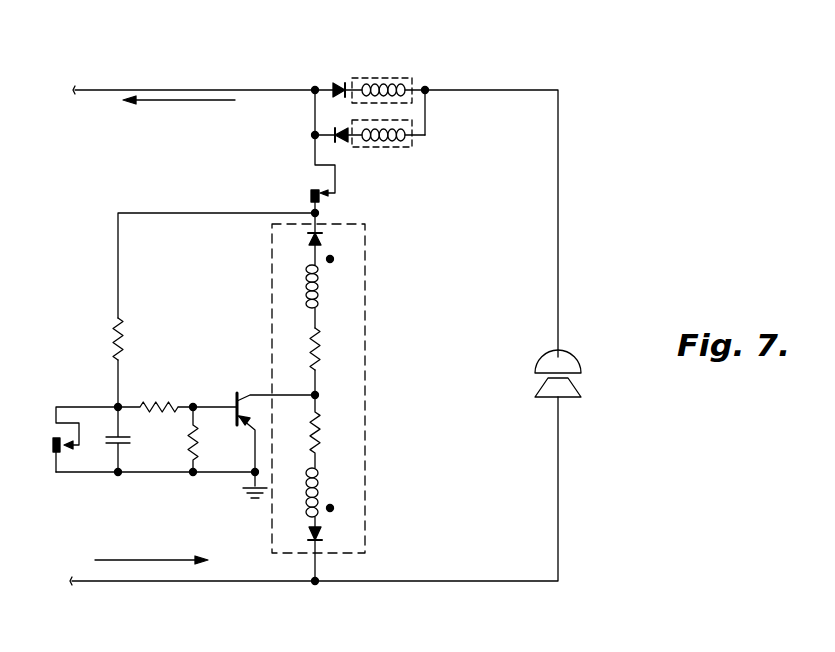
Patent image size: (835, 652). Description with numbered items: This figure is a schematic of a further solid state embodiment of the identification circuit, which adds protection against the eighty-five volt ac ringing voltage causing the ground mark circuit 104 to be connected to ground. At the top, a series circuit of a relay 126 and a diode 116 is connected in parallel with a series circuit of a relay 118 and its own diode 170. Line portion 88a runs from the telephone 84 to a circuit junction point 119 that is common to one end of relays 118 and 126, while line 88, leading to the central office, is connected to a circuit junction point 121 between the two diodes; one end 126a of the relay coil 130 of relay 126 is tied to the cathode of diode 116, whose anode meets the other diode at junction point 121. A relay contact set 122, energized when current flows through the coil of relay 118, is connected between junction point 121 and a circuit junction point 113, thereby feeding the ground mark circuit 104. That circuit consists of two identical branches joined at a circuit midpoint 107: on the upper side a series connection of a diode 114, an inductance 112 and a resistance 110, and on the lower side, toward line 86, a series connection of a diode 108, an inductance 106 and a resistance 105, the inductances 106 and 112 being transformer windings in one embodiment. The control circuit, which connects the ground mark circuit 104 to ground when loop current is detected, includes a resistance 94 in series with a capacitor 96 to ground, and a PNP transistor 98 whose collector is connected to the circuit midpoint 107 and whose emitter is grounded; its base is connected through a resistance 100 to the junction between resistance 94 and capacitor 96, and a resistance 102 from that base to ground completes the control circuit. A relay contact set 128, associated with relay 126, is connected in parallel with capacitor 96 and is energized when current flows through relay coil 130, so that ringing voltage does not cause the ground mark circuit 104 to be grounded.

The telephone 84 is at (562, 368).
The line 86 is at (443, 582).
The line 88 is at (224, 89).
The line portion 88a is at (484, 89).
The resistance 94 is at (126, 338).
The capacitor 96 is at (136, 443).
The PNP transistor 98 is at (234, 400).
The resistance 100 is at (163, 403).
The resistance 102 is at (200, 448).
The ground mark circuit 104 is at (367, 343).
The resistance 105 is at (333, 432).
The inductance 106 is at (321, 478).
The circuit midpoint 107 is at (332, 400).
The diode 108 is at (321, 532).
The resistance 110 is at (334, 348).
The inductance 112 is at (320, 294).
The circuit junction point 113 is at (320, 212).
The diode 114 is at (340, 239).
The diode 116 is at (342, 83).
The relay 118 is at (383, 150).
The circuit junction point 119 is at (428, 87).
The circuit junction point 121 is at (398, 138).
The relay contact set 122 is at (310, 181).
The relay 126 is at (382, 72).
The end of relay coil 126a is at (360, 80).
The relay contact set 128 is at (56, 433).
The relay coil 130 is at (394, 81).
The diode 170 is at (339, 140).